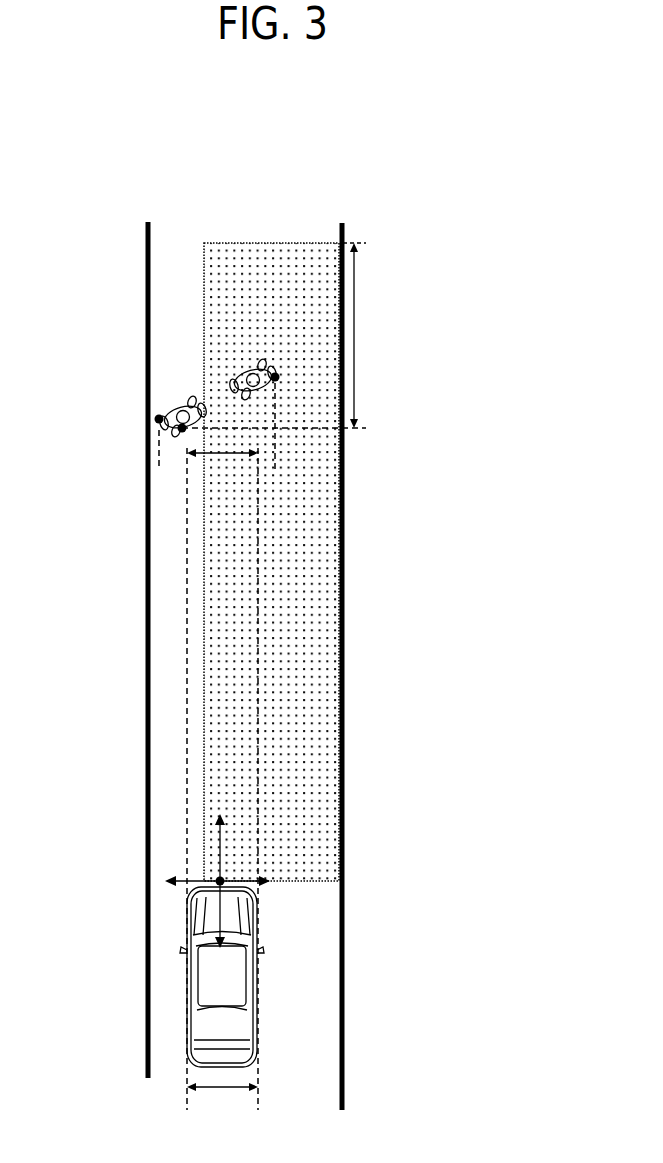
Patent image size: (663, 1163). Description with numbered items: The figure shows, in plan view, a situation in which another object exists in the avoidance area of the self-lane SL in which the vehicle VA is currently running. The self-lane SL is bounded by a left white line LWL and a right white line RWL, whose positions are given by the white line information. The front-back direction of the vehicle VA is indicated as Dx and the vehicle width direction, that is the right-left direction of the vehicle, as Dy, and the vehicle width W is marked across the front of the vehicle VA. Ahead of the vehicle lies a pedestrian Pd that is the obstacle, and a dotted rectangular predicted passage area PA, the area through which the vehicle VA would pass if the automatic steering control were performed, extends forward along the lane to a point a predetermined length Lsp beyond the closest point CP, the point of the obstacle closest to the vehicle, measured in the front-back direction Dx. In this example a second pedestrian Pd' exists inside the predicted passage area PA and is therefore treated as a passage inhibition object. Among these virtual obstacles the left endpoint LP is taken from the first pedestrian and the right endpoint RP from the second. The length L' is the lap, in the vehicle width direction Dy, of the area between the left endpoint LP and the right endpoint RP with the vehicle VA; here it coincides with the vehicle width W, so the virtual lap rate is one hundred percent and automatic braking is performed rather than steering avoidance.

The self-lane SL is at (245, 216).
The predicted passage area PA is at (314, 243).
The left white line LWL is at (147, 515).
The right white line RWL is at (345, 515).
The predetermined length Lsp is at (366, 335).
The closest point CP is at (182, 429).
The left endpoint LP is at (159, 419).
The right endpoint RP is at (275, 377).
The length of lap L' is at (222, 779).
The front-back direction Dx is at (232, 881).
The vehicle width direction Dy is at (232, 892).
The vehicle VA is at (258, 992).
The vehicle width W is at (222, 1099).